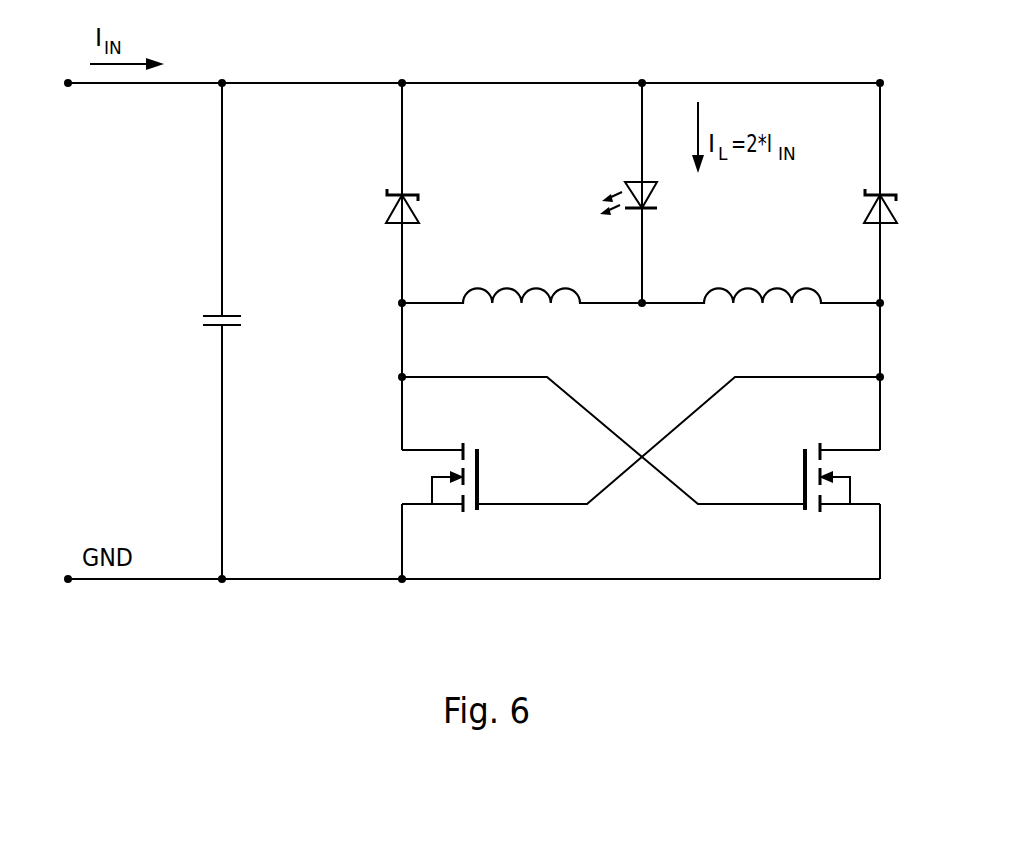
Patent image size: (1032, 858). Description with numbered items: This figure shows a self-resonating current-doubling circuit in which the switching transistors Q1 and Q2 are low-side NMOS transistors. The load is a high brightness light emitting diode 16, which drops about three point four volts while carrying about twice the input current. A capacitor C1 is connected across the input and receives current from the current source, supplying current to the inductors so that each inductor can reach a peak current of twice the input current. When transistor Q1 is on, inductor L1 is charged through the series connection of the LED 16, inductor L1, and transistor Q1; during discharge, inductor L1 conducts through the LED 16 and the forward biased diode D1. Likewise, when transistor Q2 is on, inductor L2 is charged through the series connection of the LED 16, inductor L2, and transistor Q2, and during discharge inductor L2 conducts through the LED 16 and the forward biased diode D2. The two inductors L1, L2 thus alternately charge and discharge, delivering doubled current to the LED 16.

The light emitting diode 16 is at (634, 180).
The capacitor C1 is at (210, 331).
The diode D1 is at (392, 193).
The diode D2 is at (869, 193).
The inductor L1 is at (522, 311).
The inductor L2 is at (761, 311).
The transistor Q1 is at (428, 477).
The transistor Q2 is at (854, 477).